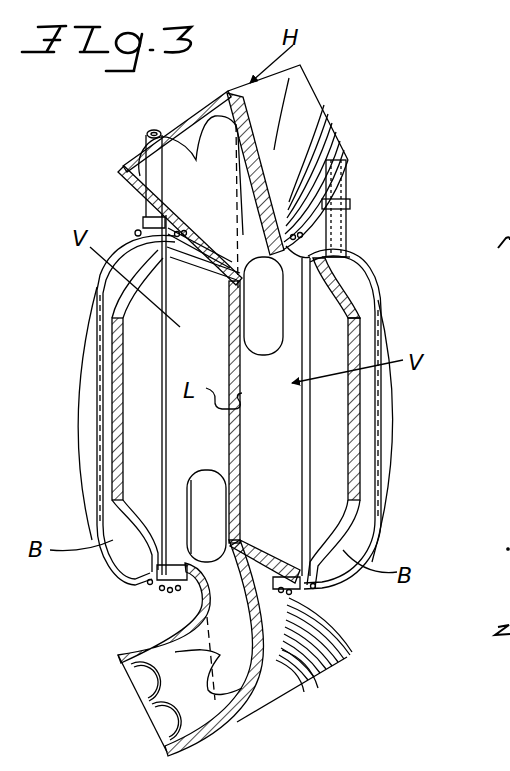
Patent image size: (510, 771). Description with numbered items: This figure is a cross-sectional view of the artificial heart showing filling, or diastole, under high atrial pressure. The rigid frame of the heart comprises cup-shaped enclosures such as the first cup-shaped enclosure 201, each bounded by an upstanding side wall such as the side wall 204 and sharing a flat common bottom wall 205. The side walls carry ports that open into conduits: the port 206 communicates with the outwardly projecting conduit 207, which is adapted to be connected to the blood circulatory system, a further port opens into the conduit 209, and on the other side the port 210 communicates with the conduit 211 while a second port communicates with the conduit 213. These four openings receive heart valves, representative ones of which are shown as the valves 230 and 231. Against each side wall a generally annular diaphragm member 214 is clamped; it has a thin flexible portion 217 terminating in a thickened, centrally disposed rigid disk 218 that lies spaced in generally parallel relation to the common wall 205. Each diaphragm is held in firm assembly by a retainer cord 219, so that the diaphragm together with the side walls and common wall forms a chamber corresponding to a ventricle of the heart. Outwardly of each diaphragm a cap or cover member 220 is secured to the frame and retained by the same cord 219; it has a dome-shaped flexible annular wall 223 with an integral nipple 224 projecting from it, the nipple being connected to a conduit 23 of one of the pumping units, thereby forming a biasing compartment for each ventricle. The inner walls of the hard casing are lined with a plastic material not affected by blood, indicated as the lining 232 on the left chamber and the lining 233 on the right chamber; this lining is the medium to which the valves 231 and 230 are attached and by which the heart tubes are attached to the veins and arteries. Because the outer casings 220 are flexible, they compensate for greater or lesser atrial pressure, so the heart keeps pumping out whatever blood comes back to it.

The conduit 23 is at (148, 134).
The first cup-shaped enclosure 201 is at (210, 258).
The side wall 204 is at (283, 540).
The common bottom wall 205 is at (238, 326).
The port 206 is at (212, 447).
The conduit 207 is at (120, 654).
The conduit 209 is at (313, 660).
The port 210 is at (262, 356).
The conduit 211 is at (122, 178).
The conduit 213 is at (312, 125).
The diaphragm member 214 is at (110, 516).
The thin flexible portion 217 is at (133, 532).
The rigid disk 218 is at (117, 393).
The retainer cord 219 is at (172, 600).
The cap or cover member 220 is at (93, 289).
The dome-shaped flexible annular wall 223 is at (96, 428).
The nipple 224 is at (347, 215).
The heart valve 230 is at (145, 715).
The heart valve 231 is at (186, 127).
The plastic lining material 232 is at (221, 664).
The plastic lining material 233 is at (260, 205).